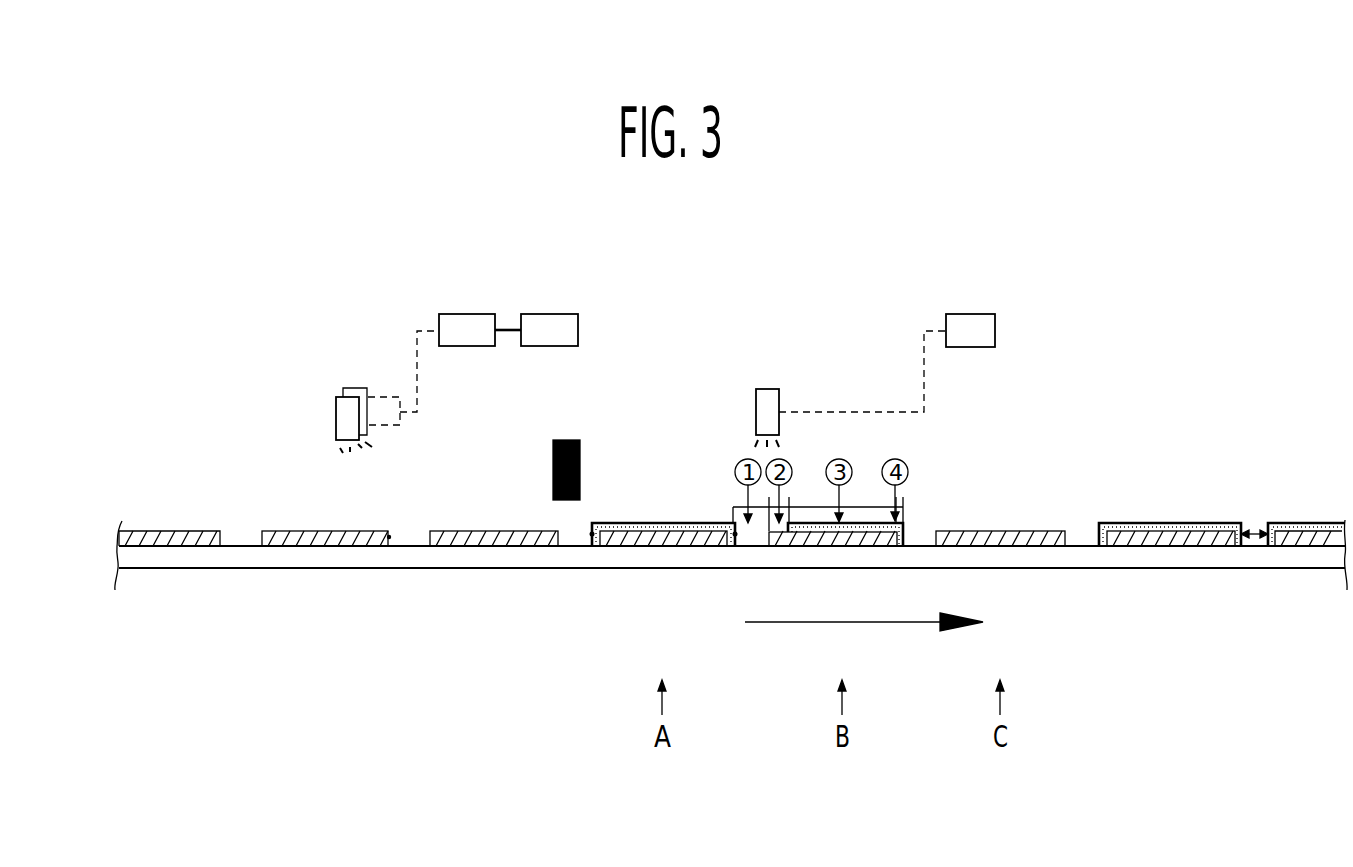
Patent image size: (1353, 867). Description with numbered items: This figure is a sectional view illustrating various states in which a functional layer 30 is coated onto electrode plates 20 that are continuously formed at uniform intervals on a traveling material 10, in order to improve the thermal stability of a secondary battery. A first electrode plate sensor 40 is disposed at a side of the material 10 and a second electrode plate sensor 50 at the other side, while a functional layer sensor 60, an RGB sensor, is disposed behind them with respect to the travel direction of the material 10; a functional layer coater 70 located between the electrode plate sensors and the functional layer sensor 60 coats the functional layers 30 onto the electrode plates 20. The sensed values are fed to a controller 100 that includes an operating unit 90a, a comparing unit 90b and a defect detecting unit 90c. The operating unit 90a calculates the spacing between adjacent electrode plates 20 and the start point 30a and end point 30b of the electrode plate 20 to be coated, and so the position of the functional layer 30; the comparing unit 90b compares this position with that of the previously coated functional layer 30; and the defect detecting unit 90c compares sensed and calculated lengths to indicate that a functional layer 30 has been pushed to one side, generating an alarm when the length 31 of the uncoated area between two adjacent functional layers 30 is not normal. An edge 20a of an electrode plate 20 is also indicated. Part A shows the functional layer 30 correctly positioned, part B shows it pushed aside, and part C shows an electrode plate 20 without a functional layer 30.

The material 10 is at (448, 556).
The electrode plate 20 is at (546, 540).
The electrode pattern edge 20a is at (389, 537).
The functional layer 30 is at (597, 540).
The start point 30a is at (592, 535).
The end point 30b is at (735, 536).
The length between two adjacent functional layers 31 is at (1252, 536).
The first electrode plate sensor 40 is at (336, 415).
The second electrode plate sensor 50 is at (356, 388).
The functional layer sensor 60 is at (775, 389).
The functional layer coater 70 is at (580, 465).
The operating unit 90a is at (483, 314).
The comparing unit 90b is at (551, 314).
The defect detecting unit 90c is at (997, 289).
The controller 100 is at (753, 261).